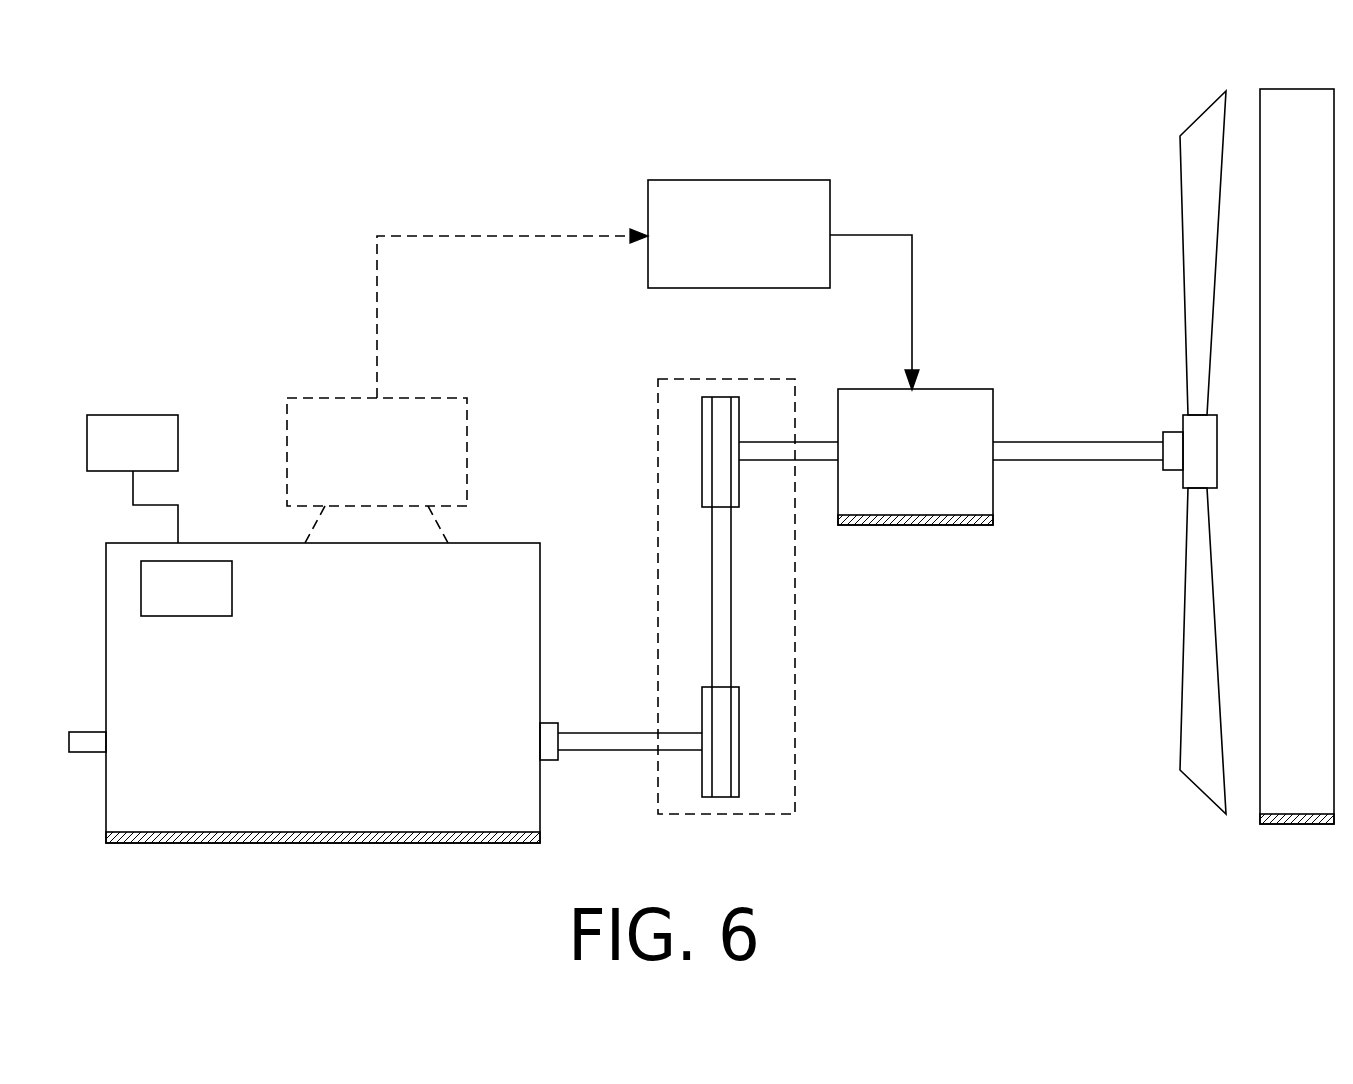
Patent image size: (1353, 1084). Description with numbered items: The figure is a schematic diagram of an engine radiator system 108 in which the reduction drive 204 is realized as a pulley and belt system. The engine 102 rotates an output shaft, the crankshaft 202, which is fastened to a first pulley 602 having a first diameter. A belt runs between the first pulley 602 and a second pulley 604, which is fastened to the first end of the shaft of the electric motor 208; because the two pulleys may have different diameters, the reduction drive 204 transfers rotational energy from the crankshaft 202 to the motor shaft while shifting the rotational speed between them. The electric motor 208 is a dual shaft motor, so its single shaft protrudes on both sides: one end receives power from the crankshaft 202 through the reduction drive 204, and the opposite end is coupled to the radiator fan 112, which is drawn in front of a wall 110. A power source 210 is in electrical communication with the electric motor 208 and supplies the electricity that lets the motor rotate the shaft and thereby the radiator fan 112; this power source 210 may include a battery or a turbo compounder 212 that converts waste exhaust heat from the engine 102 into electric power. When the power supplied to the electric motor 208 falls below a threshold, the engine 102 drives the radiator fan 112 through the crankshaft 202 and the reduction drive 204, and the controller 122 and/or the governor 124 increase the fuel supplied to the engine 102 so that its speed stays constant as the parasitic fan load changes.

The engine radiator system 108 is at (199, 79).
The engine 102 is at (302, 700).
The governor 124 is at (166, 600).
The controller 122 is at (112, 455).
The turbo compounder 212 is at (356, 465).
The power source 210 is at (718, 246).
The reduction drive 204 is at (658, 380).
The second pulley 604 is at (711, 507).
The first pulley 602 is at (739, 687).
The crankshaft 202 is at (630, 732).
The electric motor 208 is at (894, 465).
The radiator fan 112 is at (1180, 136).
The wall 110 is at (1279, 460).